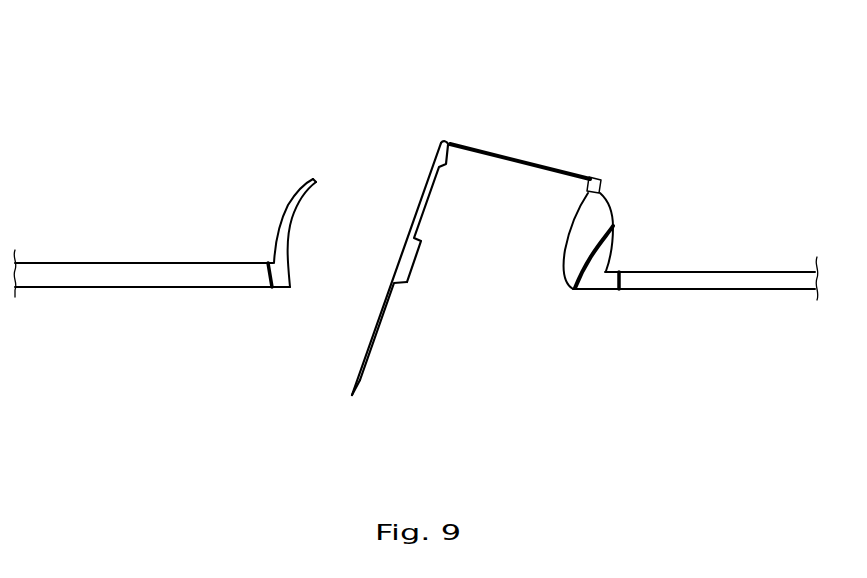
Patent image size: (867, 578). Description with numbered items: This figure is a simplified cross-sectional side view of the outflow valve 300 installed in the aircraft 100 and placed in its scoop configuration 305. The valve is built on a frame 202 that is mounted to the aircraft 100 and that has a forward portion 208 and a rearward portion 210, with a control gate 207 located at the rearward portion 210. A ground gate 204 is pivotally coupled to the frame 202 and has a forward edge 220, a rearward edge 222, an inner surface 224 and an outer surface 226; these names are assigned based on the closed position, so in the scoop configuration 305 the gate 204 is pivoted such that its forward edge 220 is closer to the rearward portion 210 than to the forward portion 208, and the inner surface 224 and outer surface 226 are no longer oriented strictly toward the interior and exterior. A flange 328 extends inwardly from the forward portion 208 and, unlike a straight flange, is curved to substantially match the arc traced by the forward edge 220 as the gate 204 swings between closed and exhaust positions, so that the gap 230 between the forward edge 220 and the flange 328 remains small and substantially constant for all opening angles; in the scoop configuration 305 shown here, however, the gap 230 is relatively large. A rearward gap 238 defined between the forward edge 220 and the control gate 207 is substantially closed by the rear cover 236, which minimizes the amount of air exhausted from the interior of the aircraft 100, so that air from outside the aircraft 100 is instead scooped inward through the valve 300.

The aircraft 100 is at (705, 290).
The frame 202 is at (277, 290).
The ground gate 204 is at (400, 287).
The control gate 207 is at (603, 216).
The forward portion 208 is at (253, 240).
The rearward portion 210 is at (633, 260).
The forward edge 220 is at (437, 255).
The rearward edge 222 is at (353, 391).
The inner surface 224 is at (426, 235).
The outer surface 226 is at (406, 217).
The gap 230 is at (397, 139).
The rear cover 236 is at (558, 167).
The rearward gap 238 is at (518, 245).
The outflow valve 300 is at (316, 376).
The scoop configuration 305 is at (287, 351).
The flange 328 is at (283, 213).